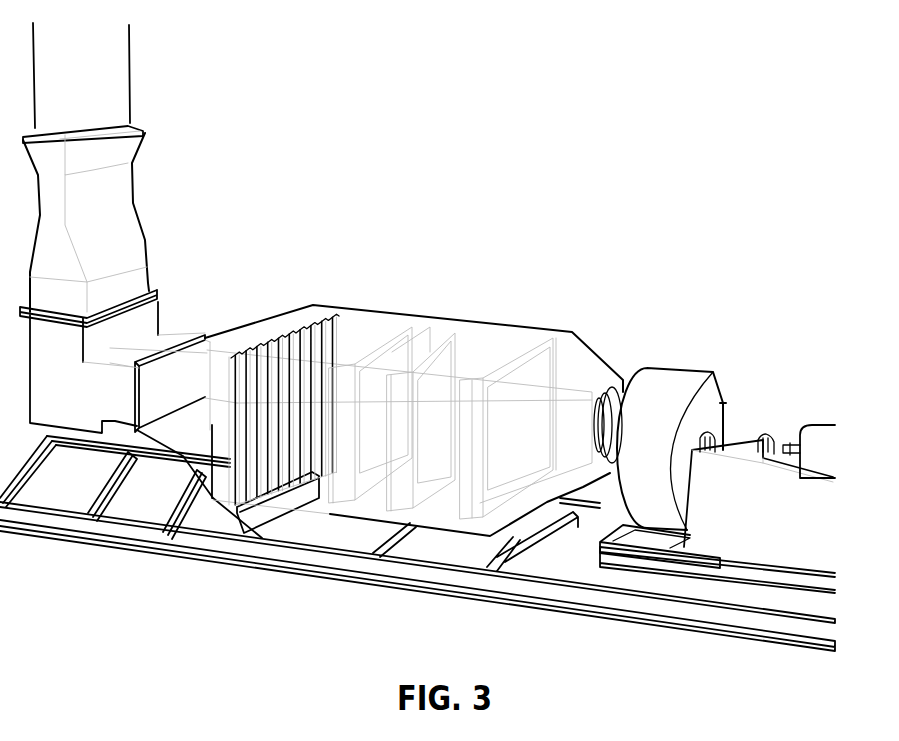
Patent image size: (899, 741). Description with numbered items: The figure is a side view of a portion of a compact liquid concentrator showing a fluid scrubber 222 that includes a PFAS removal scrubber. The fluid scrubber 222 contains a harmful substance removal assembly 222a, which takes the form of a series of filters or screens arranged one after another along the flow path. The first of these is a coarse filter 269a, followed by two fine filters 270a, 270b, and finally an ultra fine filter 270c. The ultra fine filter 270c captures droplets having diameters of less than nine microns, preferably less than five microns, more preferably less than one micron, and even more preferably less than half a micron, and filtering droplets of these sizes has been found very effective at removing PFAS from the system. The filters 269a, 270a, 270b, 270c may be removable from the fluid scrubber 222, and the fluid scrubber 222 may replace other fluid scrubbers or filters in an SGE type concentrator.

The fluid scrubber 222 is at (335, 103).
The harmful substance removal assembly 222a is at (460, 175).
The coarse filter 269a is at (288, 327).
The fine filter 270a is at (403, 338).
The fine filter 270b is at (470, 340).
The ultra fine filter 270c is at (543, 342).